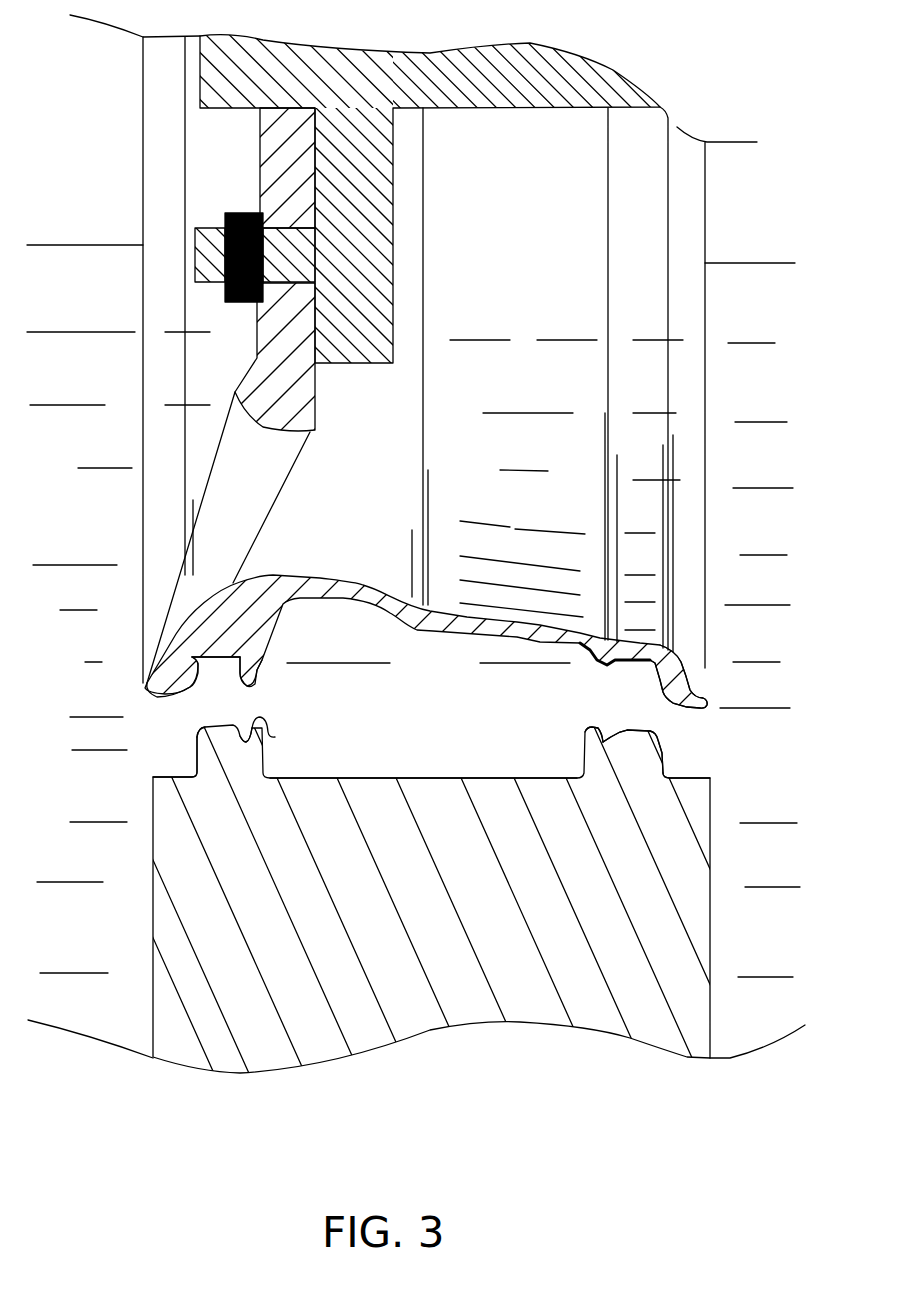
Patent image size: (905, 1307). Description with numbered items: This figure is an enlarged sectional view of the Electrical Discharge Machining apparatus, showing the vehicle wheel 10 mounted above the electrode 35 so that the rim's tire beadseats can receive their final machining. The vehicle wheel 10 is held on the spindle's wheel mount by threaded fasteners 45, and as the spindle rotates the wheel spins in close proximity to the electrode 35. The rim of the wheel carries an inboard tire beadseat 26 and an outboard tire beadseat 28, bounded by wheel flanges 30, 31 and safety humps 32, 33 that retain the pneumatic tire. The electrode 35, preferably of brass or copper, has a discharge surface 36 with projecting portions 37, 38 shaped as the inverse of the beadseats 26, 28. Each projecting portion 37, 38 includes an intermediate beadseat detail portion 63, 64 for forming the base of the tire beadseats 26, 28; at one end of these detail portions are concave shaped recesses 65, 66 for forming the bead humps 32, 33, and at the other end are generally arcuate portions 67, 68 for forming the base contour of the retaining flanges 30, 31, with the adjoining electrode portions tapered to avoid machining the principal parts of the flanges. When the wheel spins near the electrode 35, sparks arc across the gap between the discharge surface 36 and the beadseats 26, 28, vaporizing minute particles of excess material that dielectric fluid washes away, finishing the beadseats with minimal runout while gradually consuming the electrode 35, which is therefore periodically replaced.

The vehicle wheel 10 is at (217, 153).
The threaded fasteners 45 is at (200, 258).
The inboard tire beadseat 26 is at (633, 667).
The outboard tire beadseat 28 is at (218, 660).
The wheel flange 31 is at (193, 680).
The safety hump 33 is at (250, 688).
The safety hump 32 is at (615, 667).
The wheel flange 30 is at (658, 695).
The electrode 35 is at (522, 982).
The discharge surface 36 is at (435, 778).
The projecting portion 37 is at (668, 775).
The projecting portion 38 is at (197, 763).
The intermediate beadseat detail portion 63 is at (637, 730).
The intermediate beadseat detail portion 64 is at (225, 712).
The concave shaped recess 65 is at (598, 722).
The concave shaped recess 66 is at (275, 737).
The arcuate portion 67 is at (660, 741).
The arcuate portion 68 is at (197, 735).